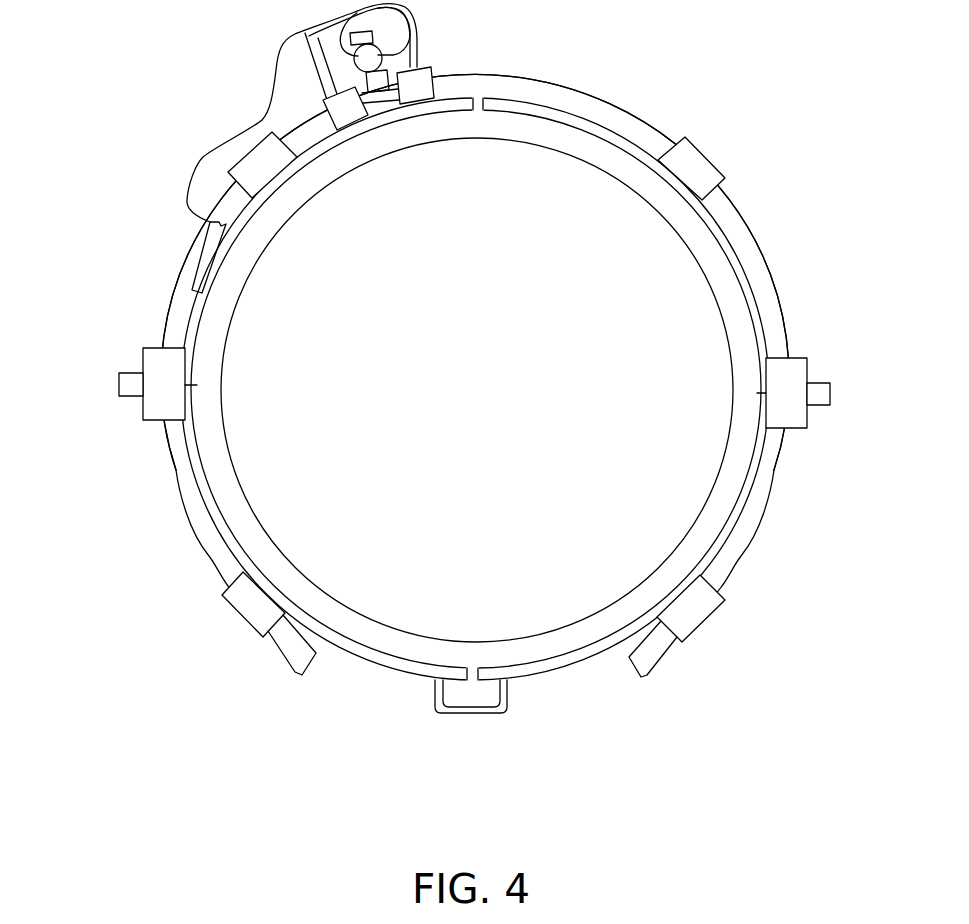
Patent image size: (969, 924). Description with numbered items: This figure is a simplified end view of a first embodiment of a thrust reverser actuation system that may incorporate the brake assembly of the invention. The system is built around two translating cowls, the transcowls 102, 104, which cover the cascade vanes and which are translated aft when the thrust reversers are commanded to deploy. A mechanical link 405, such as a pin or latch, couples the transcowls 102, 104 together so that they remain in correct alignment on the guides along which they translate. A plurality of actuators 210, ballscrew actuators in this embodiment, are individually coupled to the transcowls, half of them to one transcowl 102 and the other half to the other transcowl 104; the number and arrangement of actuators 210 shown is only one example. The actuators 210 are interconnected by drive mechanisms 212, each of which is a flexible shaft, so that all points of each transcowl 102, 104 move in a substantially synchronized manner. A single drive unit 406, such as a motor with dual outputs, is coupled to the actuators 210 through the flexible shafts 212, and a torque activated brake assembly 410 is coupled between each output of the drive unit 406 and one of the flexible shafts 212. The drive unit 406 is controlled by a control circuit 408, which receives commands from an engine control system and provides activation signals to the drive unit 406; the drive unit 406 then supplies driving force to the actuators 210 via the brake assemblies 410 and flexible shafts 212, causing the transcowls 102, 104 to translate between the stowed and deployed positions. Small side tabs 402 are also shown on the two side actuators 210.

The transcowl 102 is at (742, 478).
The transcowl 104 is at (207, 470).
The actuator 210 is at (246, 146).
The drive mechanism 212 is at (567, 85).
The side tabs 402 is at (119, 386).
The mechanical link 405 is at (483, 714).
The drive unit 406 is at (418, 39).
The control circuit 408 is at (192, 252).
The torque activated brake assembly 410 is at (352, 118).